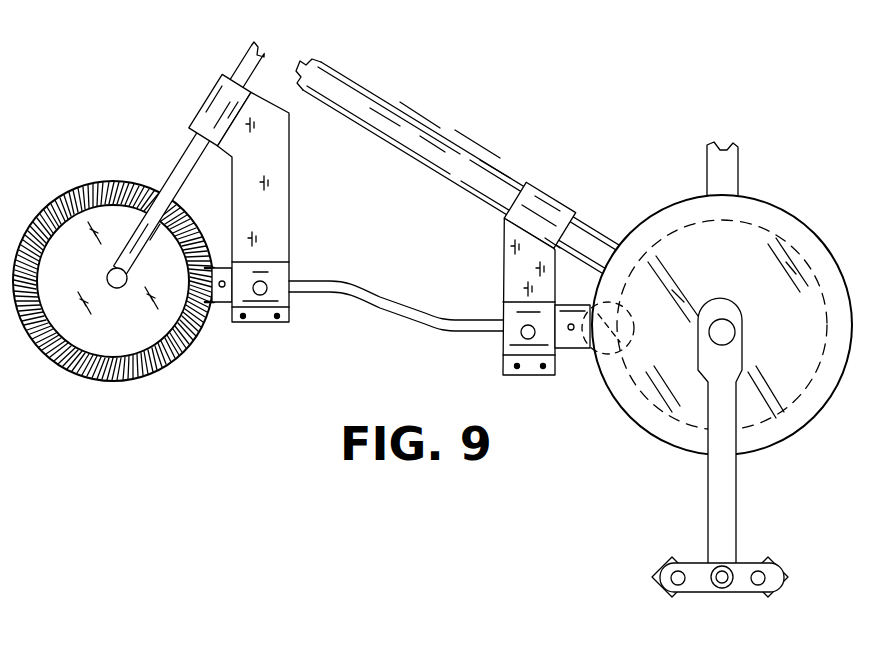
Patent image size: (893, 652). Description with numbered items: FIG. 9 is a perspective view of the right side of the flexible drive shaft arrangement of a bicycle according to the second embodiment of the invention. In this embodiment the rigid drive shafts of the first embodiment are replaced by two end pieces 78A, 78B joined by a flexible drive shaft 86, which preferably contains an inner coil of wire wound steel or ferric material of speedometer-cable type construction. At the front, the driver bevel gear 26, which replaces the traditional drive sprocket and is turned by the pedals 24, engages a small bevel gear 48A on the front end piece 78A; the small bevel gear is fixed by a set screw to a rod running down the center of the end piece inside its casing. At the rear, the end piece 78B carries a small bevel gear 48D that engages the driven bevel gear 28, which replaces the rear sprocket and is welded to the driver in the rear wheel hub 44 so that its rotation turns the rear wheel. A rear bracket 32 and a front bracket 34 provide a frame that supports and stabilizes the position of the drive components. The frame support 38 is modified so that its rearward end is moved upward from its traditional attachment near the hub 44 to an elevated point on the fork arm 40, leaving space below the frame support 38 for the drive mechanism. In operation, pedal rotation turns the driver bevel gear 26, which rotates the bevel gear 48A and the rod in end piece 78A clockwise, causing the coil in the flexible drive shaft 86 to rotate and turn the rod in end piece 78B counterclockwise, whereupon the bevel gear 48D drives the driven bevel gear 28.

The pedals 24 is at (668, 558).
The driver bevel gear 26 is at (688, 197).
The driven bevel gear 28 is at (102, 383).
The rear bracket 32 is at (289, 210).
The front bracket 34 is at (537, 196).
The frame support 38 is at (452, 150).
The fork arm 40 is at (186, 152).
The hub 44 is at (115, 290).
The small bevel gear 48A is at (626, 326).
The small bevel gear 48D is at (208, 308).
The end piece 78A is at (588, 350).
The end piece 78B is at (221, 305).
The flexible drive shaft 86 is at (393, 307).